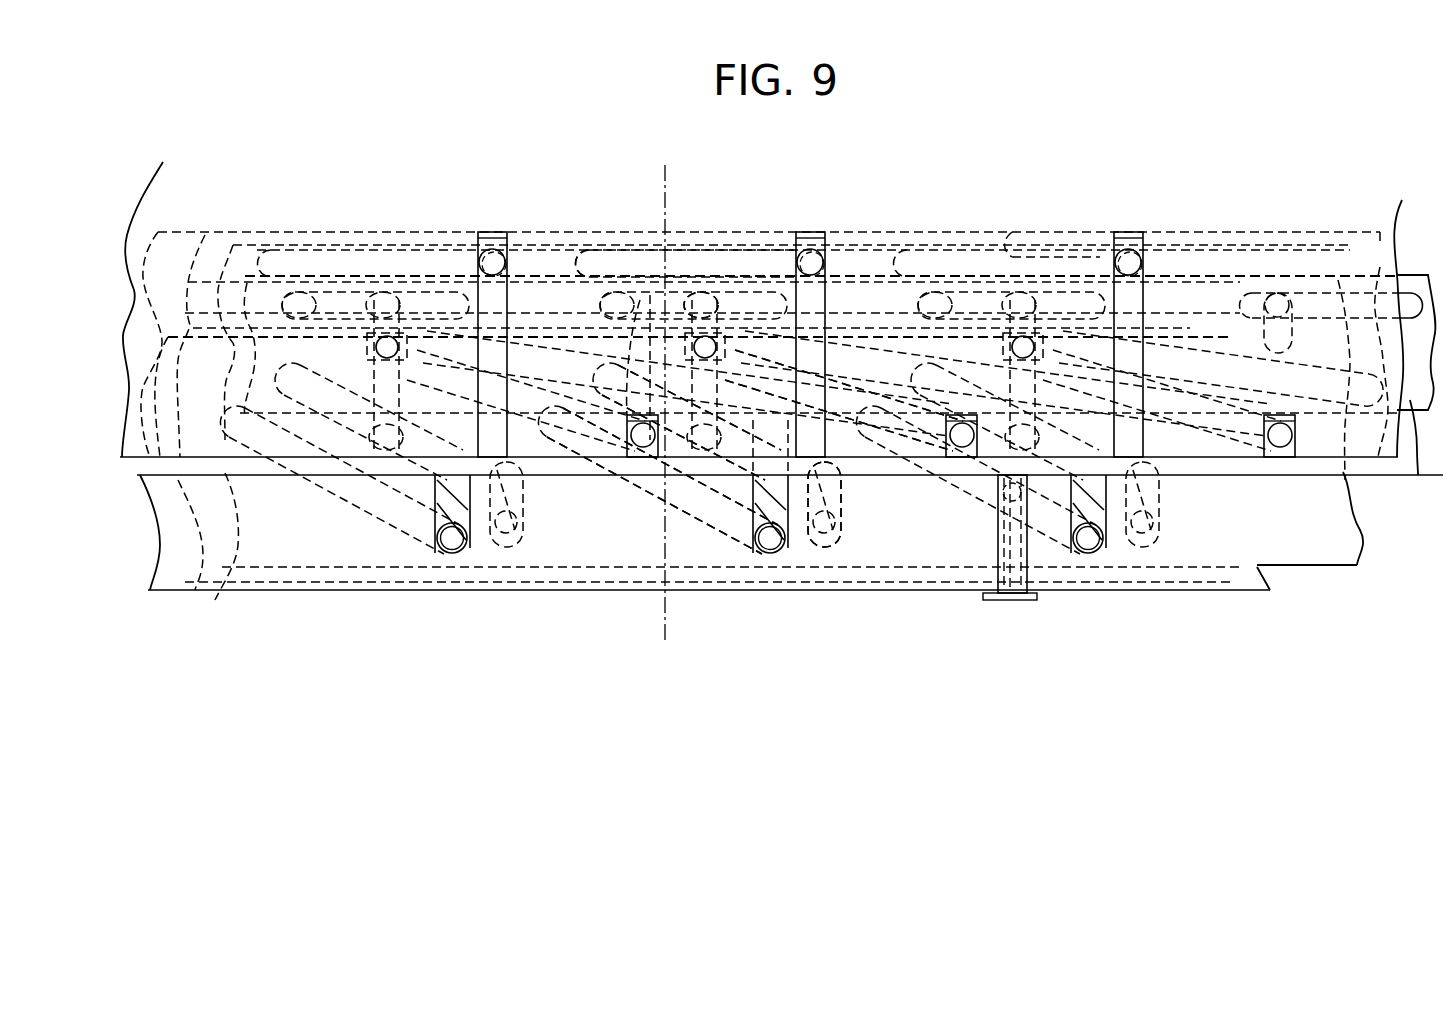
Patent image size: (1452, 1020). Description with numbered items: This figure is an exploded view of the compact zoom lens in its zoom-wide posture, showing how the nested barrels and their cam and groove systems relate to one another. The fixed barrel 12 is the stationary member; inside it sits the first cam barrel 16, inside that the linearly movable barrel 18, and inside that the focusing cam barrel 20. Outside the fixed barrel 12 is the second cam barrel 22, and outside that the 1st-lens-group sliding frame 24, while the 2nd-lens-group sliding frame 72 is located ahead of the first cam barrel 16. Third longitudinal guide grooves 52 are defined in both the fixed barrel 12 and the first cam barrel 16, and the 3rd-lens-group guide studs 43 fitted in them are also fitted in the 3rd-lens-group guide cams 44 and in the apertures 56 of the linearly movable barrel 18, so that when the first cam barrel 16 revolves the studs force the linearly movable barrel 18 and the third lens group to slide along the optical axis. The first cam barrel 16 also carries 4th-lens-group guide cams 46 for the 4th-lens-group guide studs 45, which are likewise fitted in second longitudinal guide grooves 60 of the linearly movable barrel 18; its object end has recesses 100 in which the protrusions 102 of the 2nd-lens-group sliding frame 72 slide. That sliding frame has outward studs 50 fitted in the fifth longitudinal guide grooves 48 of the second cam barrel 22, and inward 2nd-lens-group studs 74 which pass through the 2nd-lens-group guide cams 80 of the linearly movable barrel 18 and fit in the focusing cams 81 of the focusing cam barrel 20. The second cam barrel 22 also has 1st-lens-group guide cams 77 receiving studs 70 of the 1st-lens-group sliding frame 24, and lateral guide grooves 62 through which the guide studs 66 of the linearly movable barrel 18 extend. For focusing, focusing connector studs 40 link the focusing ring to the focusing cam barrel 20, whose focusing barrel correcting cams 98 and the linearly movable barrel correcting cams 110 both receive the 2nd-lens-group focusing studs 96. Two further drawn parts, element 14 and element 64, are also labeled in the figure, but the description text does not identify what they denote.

The fixed barrel 12 is at (170, 570).
The support post 14 is at (1017, 598).
The first cam barrel 16 is at (215, 600).
The linearly movable barrel 18 is at (1317, 537).
The focusing cam barrel 20 is at (1413, 400).
The second cam barrel 22 is at (205, 235).
The 1st-lens-group sliding frame 24 is at (158, 215).
The focusing connector studs 40 is at (1002, 470).
The 3rd-lens-group guide studs 43 is at (775, 540).
The 3rd-lens-group guide cams 44 is at (670, 419).
The 4th-lens-group guide studs 45 is at (800, 433).
The 4th-lens-group guide cams 46 is at (780, 423).
The fifth longitudinal guide grooves 48 is at (745, 400).
The studs 50 is at (690, 333).
The third longitudinal guide grooves 52 is at (443, 527).
The apertures 56 is at (777, 483).
The second longitudinal guide grooves 60 is at (813, 483).
The lateral guide grooves 62 is at (1005, 250).
The upper post 64 is at (480, 300).
The guide studs 66 is at (1133, 257).
The studs 70 is at (1277, 437).
The 2nd-lens-group sliding frame 72 is at (553, 295).
The 2nd-lens-group studs 74 is at (680, 427).
The 1st-lens-group guide cams 77 is at (1178, 373).
The 2nd-lens-group guide cams 80 is at (857, 343).
The focusing cams 81 is at (857, 383).
The 2nd-lens-group focusing studs 96 is at (1280, 317).
The focusing barrel correcting cams 98 is at (1380, 267).
The recesses 100 is at (650, 287).
The protrusions 102 is at (668, 312).
The linearly movable barrel correcting cams 110 is at (1338, 280).